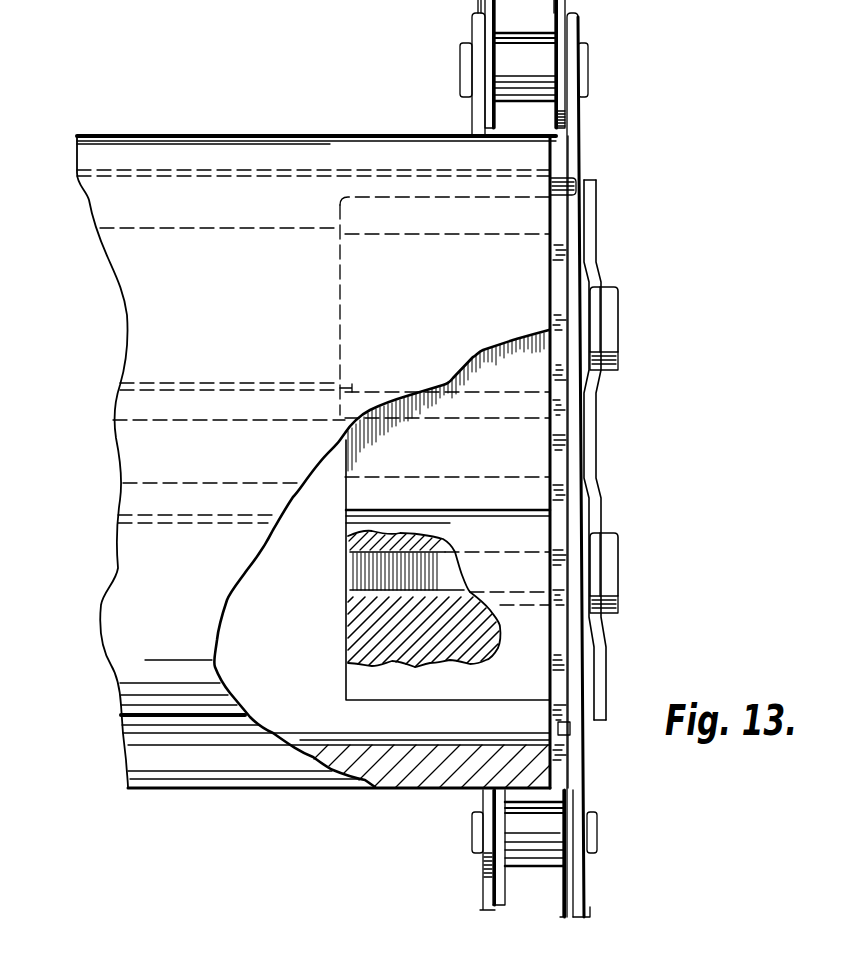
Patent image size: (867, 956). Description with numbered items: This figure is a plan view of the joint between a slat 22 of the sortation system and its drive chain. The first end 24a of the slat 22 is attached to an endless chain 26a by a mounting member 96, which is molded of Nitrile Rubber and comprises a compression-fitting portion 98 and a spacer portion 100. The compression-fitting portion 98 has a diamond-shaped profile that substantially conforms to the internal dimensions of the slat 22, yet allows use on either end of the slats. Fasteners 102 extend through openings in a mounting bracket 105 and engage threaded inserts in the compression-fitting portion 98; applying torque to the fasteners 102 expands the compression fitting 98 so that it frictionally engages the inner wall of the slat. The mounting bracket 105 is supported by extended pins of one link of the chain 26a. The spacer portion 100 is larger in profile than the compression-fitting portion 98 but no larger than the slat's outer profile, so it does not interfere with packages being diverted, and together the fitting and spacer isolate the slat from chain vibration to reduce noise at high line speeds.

The slat 22 is at (118, 303).
The first end 24a is at (400, 135).
The endless chain 26a is at (582, 24).
The mounting member 96 is at (334, 679).
The compression-fitting portion 98 is at (380, 703).
The spacer portion 100 is at (557, 177).
The fasteners 102 is at (619, 310).
The mounting bracket 105 is at (592, 221).